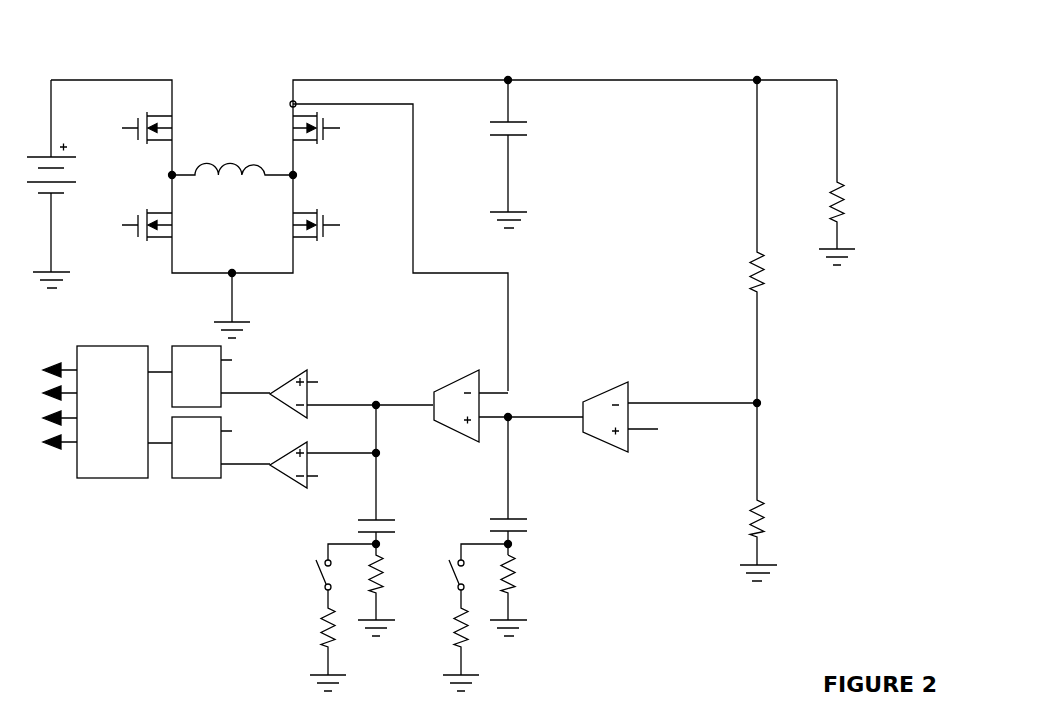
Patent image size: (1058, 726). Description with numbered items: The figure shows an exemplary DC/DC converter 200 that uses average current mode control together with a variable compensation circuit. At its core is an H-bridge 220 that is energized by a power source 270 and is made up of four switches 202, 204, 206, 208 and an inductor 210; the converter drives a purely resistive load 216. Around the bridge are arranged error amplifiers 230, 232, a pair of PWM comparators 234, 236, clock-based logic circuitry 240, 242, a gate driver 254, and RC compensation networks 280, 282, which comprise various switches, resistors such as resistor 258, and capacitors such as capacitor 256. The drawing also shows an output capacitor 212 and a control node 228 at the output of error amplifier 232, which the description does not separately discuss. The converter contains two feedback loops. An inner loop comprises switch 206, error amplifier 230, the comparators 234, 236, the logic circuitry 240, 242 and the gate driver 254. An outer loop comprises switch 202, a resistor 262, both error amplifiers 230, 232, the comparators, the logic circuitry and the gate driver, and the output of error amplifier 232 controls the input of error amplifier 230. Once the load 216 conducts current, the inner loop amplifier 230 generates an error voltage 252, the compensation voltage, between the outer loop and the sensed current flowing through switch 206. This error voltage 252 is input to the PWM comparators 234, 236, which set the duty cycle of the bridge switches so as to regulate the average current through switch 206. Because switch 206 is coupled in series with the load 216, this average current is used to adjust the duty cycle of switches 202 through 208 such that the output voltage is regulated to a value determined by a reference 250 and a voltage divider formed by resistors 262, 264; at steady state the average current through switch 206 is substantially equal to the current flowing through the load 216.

The DC/DC converter 200 is at (458, 66).
The switch 202 is at (131, 140).
The switch 204 is at (131, 238).
The switch 206 is at (334, 136).
The switch 208 is at (334, 236).
The inductor 210 is at (232, 160).
The output capacitor COUT 212 is at (500, 145).
The resistive load 216 is at (848, 203).
The H-bridge 220 is at (212, 113).
The control voltage node VC 228 is at (553, 401).
The error amplifier 230 is at (452, 372).
The error amplifier 232 is at (630, 448).
The comparator 234 is at (300, 372).
The comparator 236 is at (290, 481).
The clock-based logic circuitry 240 is at (172, 350).
The clock-based logic circuitry 242 is at (172, 475).
The reference 250 is at (700, 432).
The error voltage 252 is at (392, 390).
The gate driver 254 is at (77, 346).
The compensation capacitor 256 is at (490, 520).
The resistor 258 is at (518, 575).
The resistor 262 is at (773, 272).
The resistor 264 is at (775, 517).
The power source 270 is at (50, 153).
The RC compensation network 280 is at (535, 640).
The RC compensation network 282 is at (298, 553).